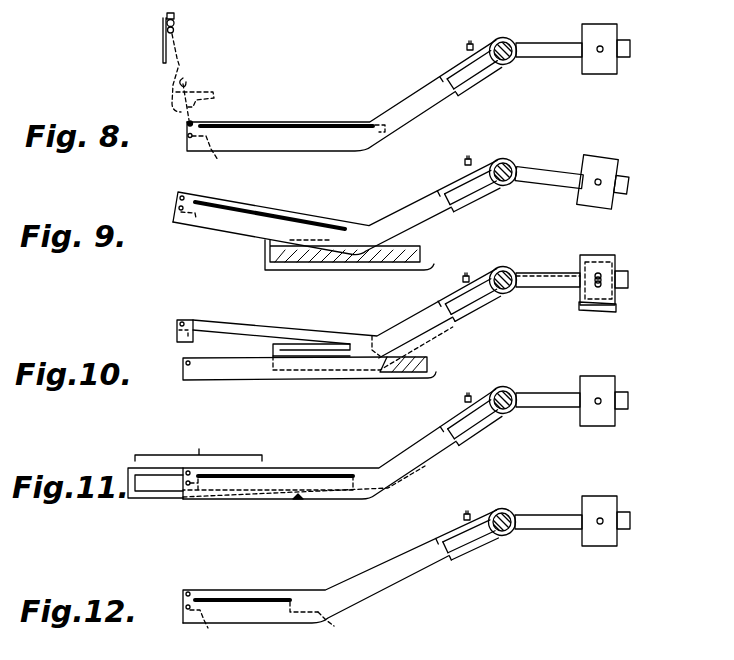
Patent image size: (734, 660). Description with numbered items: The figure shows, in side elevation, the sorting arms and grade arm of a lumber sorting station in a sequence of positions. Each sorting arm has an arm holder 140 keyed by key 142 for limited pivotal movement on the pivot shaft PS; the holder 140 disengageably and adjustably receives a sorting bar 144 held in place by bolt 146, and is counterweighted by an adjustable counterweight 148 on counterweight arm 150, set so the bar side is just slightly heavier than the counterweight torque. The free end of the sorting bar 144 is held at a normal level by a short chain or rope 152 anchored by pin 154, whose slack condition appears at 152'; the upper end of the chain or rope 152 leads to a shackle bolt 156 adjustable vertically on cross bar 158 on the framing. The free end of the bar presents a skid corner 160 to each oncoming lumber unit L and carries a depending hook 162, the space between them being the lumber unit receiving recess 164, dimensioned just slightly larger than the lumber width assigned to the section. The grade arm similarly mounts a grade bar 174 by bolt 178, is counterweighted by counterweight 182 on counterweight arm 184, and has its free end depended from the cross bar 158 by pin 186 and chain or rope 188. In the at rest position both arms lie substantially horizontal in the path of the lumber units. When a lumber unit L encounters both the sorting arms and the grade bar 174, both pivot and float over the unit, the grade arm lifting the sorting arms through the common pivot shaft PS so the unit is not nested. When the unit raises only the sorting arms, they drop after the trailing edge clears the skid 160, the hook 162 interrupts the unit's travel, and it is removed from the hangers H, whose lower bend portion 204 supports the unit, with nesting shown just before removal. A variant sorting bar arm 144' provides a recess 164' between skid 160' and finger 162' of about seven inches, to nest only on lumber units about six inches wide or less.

In FIG. 8, the arm holder 140 is at (479, 77).
In FIG. 9, the key 142 is at (497, 186).
In FIG. 8, the sorting bar 144 is at (285, 61).
In FIG. 9, the sorting bar 144 is at (335, 194).
In FIG. 10, the sorting bar 144 is at (345, 306).
In FIG. 11, the sorting bar 144 is at (342, 444).
In FIG. 12, the sorting bar arm 144' is at (340, 566).
In FIG. 10, the bolt 146 is at (462, 272).
In FIG. 10, the counterweight 148 is at (614, 312).
In FIG. 10, the counterweight arm 150 is at (565, 292).
In FIG. 8, the chain or rope 152 is at (198, 77).
In FIG. 8, the slack position of chain or rope 152' is at (173, 90).
In FIG. 8, the pin 154 is at (188, 124).
In FIG. 8, the shackle bolt 156 is at (176, 16).
In FIG. 8, the cross bar 158 is at (160, 24).
In FIG. 8, the skid corner 160 is at (400, 143).
In FIG. 10, the skid corner 160 is at (374, 338).
In FIG. 12, the skid 160' is at (341, 624).
In FIG. 8, the hook 162 is at (221, 154).
In FIG. 10, the hook 162 is at (203, 320).
In FIG. 12, the finger 162' is at (219, 628).
In FIG. 8, the lumber unit receiving recess 164 is at (286, 113).
In FIG. 10, the lumber unit receiving recess 164 is at (279, 346).
In FIG. 12, the recess 164' is at (256, 583).
In FIG. 8, the grade bar 174 is at (372, 142).
In FIG. 9, the grade bar 174 is at (228, 226).
In FIG. 10, the grade bar 174 is at (230, 376).
In FIG. 11, the grade bar 174 is at (368, 490).
In FIG. 12, the grade bar 174 is at (280, 614).
In FIG. 8, the bolt 178 is at (466, 48).
In FIG. 9, the bolt 178 is at (465, 161).
In FIG. 10, the bolt 178 is at (463, 279).
In FIG. 11, the bolt 178 is at (468, 393).
In FIG. 12, the bolt 178 is at (465, 512).
In FIG. 8, the counterweight 182 is at (614, 28).
In FIG. 9, the counterweight 182 is at (619, 168).
In FIG. 10, the counterweight 182 is at (619, 256).
In FIG. 11, the counterweight 182 is at (619, 380).
In FIG. 12, the counterweight 182 is at (619, 498).
In FIG. 8, the counterweight arm 184 is at (548, 42).
In FIG. 9, the counterweight arm 184 is at (549, 183).
In FIG. 10, the counterweight arm 184 is at (538, 272).
In FIG. 11, the counterweight arm 184 is at (548, 408).
In FIG. 12, the counterweight arm 184 is at (548, 514).
In FIG. 8, the pin 186 is at (188, 137).
In FIG. 8, the chain or rope 188 is at (189, 82).
In FIG. 9, the lower bend portion 204 is at (392, 264).
In FIG. 10, the lower bend portion 204 is at (412, 373).
In FIG. 11, the lower bend portion 204 is at (162, 498).
In FIG. 8, the pivot shaft PS is at (513, 61).
In FIG. 9, the pivot shaft PS is at (514, 182).
In FIG. 10, the pivot shaft PS is at (514, 287).
In FIG. 11, the pivot shaft PS is at (516, 410).
In FIG. 12, the pivot shaft PS is at (512, 530).
In FIG. 9, the lumber unit L is at (410, 246).
In FIG. 10, the lumber unit L is at (428, 366).
In FIG. 11, the lumber unit L is at (333, 474).
In FIG. 11, the hanger H is at (198, 446).